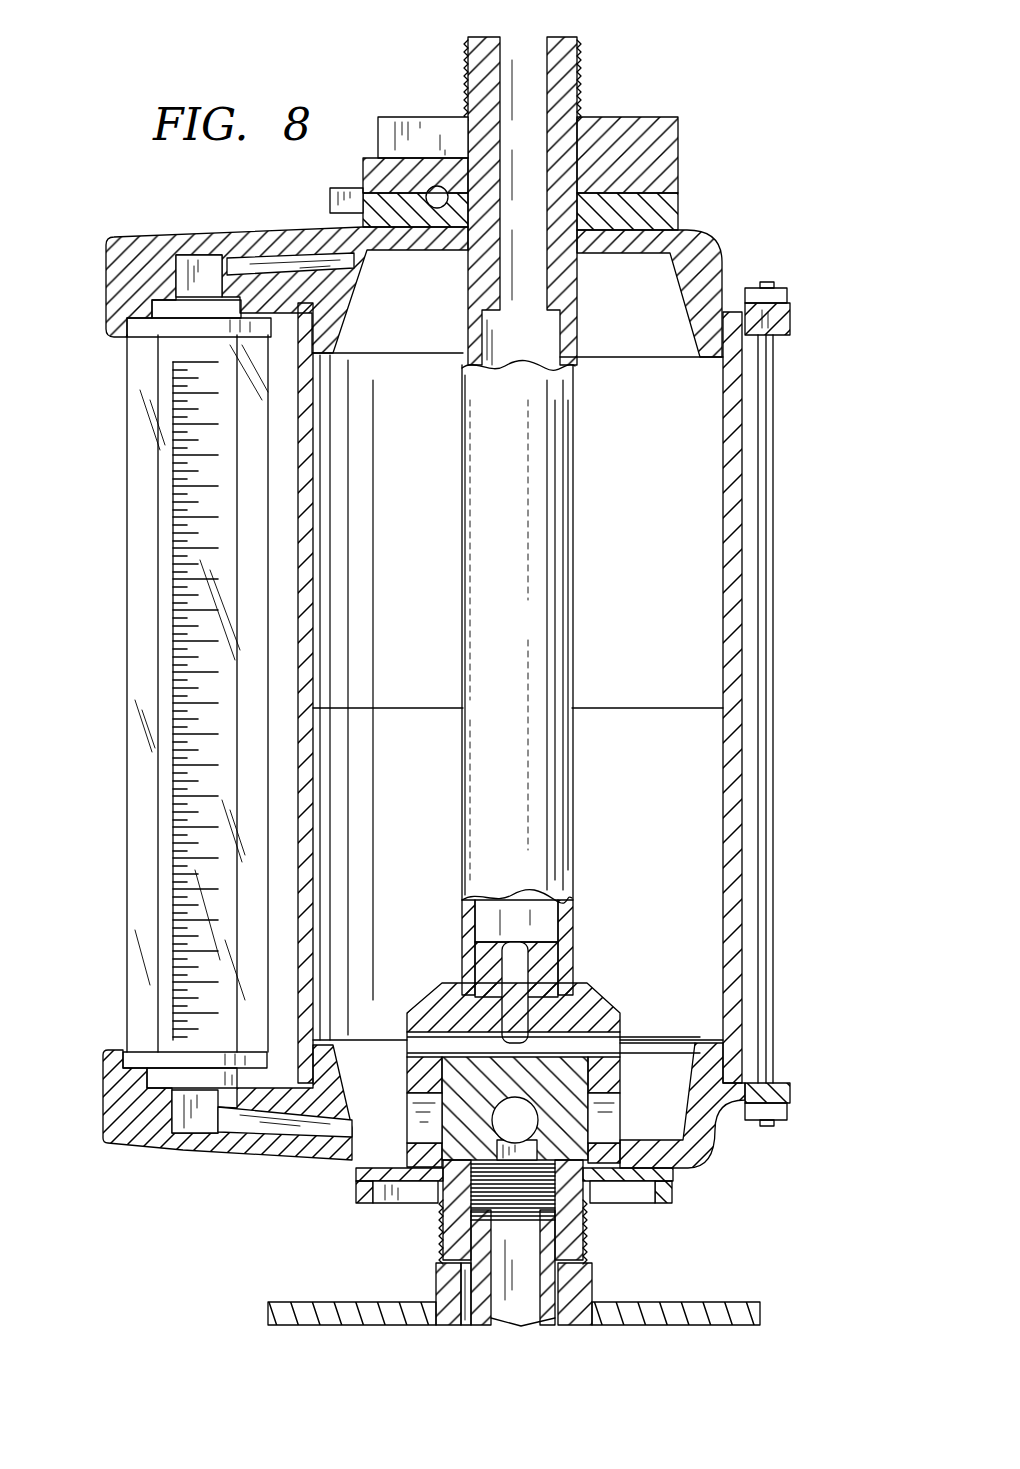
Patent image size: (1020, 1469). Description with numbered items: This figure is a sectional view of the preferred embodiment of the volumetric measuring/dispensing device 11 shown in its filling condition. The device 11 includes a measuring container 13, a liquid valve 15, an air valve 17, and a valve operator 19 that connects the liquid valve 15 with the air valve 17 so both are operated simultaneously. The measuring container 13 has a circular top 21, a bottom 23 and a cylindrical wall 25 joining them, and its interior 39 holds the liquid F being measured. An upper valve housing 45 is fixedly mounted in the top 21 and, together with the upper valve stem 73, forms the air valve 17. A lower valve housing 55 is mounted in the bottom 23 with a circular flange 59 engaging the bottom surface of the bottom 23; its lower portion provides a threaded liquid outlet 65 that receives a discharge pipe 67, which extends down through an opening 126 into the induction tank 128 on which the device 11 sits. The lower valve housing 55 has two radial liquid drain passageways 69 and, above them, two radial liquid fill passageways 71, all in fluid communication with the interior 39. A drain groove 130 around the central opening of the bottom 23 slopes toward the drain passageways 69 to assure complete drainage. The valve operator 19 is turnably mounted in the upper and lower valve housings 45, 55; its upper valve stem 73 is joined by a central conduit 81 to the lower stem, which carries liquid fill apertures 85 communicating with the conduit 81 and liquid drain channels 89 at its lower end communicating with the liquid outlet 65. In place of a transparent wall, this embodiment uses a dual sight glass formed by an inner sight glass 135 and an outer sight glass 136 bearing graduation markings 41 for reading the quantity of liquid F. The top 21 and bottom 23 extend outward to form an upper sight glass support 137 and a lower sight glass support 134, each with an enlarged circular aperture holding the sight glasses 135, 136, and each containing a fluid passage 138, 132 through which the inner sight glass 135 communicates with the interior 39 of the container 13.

The volumetric measuring/dispensing device 11 is at (793, 70).
The measuring container 13 is at (745, 600).
The liquid valve 15 is at (662, 964).
The air valve 17 is at (702, 188).
The valve operator 19 is at (614, 670).
The top 21 is at (312, 227).
The bottom 23 is at (710, 1137).
The cylindrical wall 25 is at (740, 480).
The interior 39 is at (645, 560).
The graduation markings 41 is at (176, 632).
The upper valve housing 45 is at (684, 212).
The lower valve housing 55 is at (358, 1196).
The circular flange 59 is at (668, 1186).
The liquid outlet 65 is at (588, 1212).
The discharge pipe 67 is at (555, 1326).
The liquid drain passageways 69 is at (425, 1108).
The liquid fill passageways 71 is at (420, 1043).
The upper valve stem 73 is at (672, 160).
The central conduit 81 is at (510, 732).
The liquid fill apertures 85 is at (572, 1043).
The liquid drain channels 89 is at (515, 1113).
The opening 126 is at (450, 1318).
The induction tank 128 is at (737, 1320).
The drain groove 130 is at (620, 1140).
The fluid passage 132 is at (262, 1130).
The lower sight glass support 134 is at (130, 1130).
The inner sight glass 135 is at (172, 447).
The outer sight glass 136 is at (122, 907).
The upper sight glass support 137 is at (148, 247).
The fluid passage 138 is at (255, 262).
The liquid F is at (655, 708).